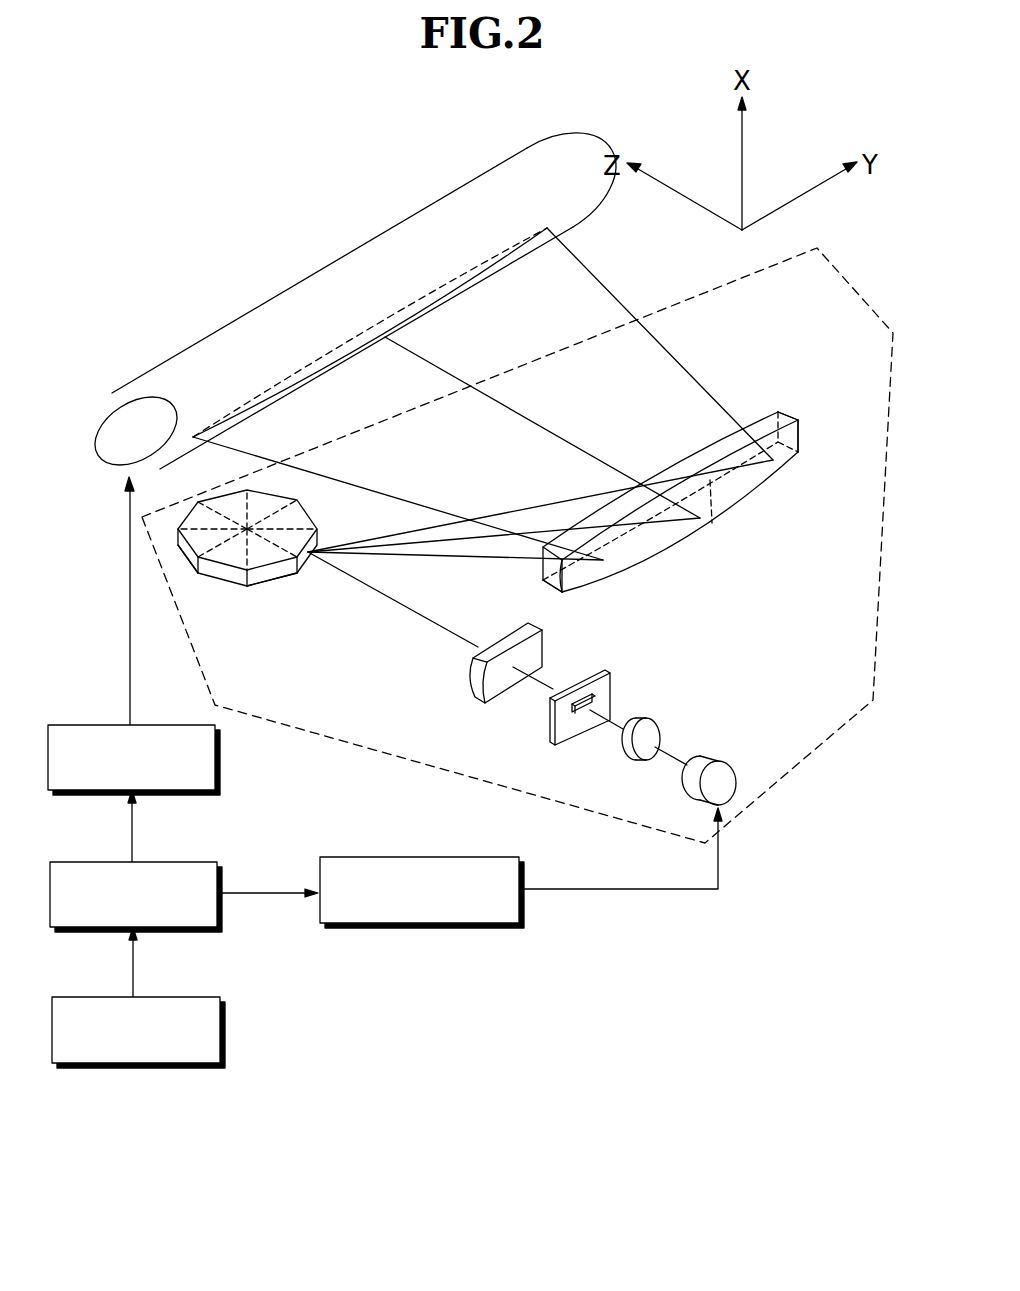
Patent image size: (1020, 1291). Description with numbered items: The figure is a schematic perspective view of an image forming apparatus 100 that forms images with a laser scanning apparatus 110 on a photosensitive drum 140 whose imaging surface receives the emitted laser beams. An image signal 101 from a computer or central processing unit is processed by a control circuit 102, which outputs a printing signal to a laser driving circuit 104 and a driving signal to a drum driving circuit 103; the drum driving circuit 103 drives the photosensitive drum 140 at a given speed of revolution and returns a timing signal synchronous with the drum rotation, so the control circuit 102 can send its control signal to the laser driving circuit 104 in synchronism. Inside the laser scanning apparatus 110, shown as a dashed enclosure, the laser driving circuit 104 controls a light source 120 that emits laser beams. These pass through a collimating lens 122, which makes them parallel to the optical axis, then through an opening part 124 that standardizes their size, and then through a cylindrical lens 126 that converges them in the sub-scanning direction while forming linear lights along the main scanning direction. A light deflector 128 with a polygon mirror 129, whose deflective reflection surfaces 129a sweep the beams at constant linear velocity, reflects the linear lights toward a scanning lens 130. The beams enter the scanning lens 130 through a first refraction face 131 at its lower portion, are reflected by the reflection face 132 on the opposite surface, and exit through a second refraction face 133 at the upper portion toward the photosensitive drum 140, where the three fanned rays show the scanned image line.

The image forming apparatus 100 is at (160, 96).
The image signal 101 is at (137, 1068).
The control circuit 102 is at (183, 930).
The drum driving circuit 103 is at (221, 758).
The laser driving circuit 104 is at (440, 928).
The laser scanning apparatus 110 is at (810, 755).
The light source 120 is at (713, 760).
The collimating lens 122 is at (647, 720).
The opening part 124 is at (551, 733).
The cylindrical lens 126 is at (475, 680).
The light deflector 128 is at (301, 592).
The polygon mirror 129 is at (235, 557).
The deflective reflection surfaces 129a is at (277, 580).
The scanning lens 130 is at (799, 405).
The first refraction face 131 is at (717, 523).
The reflection face 132 is at (765, 489).
The second refraction face 133 is at (777, 413).
The photosensitive drum 140 is at (313, 272).